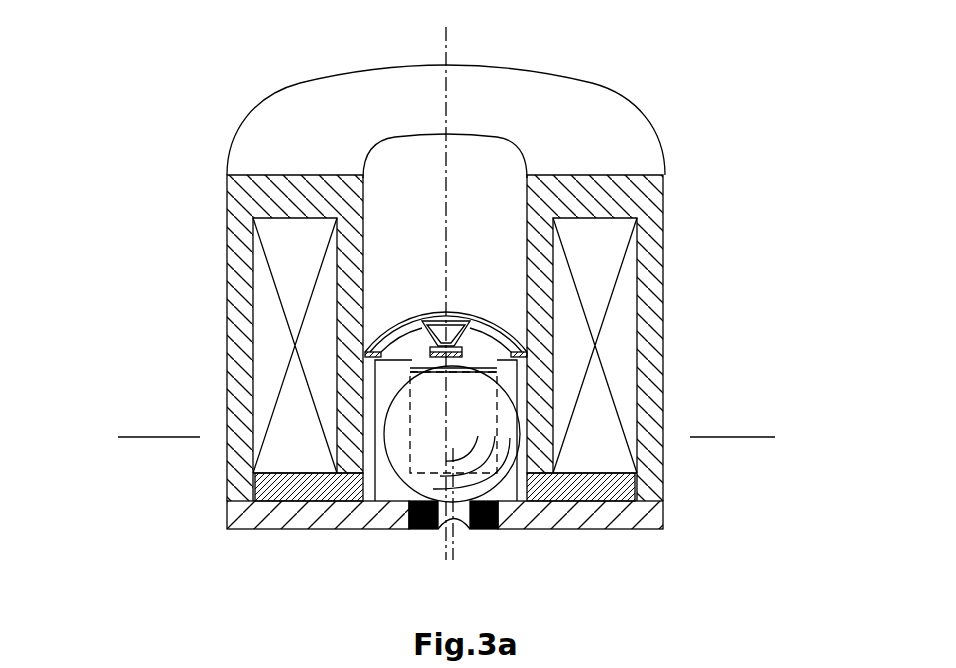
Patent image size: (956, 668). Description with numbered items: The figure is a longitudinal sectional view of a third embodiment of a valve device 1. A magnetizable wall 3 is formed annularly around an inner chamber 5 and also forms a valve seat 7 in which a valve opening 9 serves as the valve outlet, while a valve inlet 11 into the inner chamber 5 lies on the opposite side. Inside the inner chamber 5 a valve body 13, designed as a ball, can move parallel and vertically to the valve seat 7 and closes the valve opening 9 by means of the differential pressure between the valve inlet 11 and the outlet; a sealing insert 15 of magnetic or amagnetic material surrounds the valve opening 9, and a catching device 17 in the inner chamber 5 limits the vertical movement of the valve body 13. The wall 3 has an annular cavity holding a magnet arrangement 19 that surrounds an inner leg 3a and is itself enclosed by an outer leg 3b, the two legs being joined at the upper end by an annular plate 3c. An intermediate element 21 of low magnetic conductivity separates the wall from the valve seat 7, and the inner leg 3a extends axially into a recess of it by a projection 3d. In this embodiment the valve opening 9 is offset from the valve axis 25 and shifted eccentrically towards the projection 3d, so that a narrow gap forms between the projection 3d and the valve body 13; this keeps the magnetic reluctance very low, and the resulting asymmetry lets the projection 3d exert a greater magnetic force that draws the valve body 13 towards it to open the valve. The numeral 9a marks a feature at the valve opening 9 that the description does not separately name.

The valve device 1 is at (127, 143).
The magnetizable wall 3 is at (455, 289).
The inner leg 3a is at (350, 262).
The outer leg 3b is at (240, 383).
The annular plate 3c is at (283, 200).
The projection 3d is at (540, 375).
The inner chamber 5 is at (478, 245).
The valve seat 7 is at (532, 542).
The valve opening 9 is at (438, 533).
The valve seat opening 9a is at (455, 542).
The valve inlet 11 is at (385, 135).
The valve body 13 is at (402, 438).
The sealing insert 15 is at (412, 514).
The catching device 17 is at (388, 330).
The magnet arrangement 19 is at (277, 328).
The intermediate element 21 is at (287, 482).
The valve axis 25 is at (445, 47).